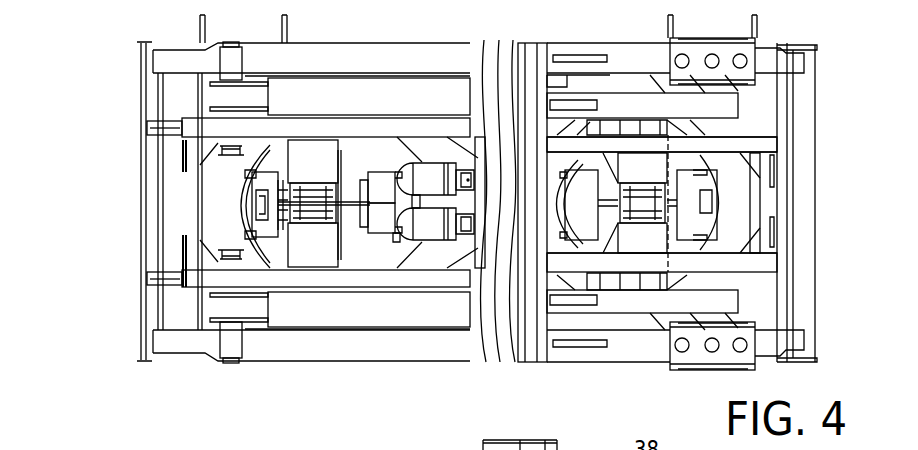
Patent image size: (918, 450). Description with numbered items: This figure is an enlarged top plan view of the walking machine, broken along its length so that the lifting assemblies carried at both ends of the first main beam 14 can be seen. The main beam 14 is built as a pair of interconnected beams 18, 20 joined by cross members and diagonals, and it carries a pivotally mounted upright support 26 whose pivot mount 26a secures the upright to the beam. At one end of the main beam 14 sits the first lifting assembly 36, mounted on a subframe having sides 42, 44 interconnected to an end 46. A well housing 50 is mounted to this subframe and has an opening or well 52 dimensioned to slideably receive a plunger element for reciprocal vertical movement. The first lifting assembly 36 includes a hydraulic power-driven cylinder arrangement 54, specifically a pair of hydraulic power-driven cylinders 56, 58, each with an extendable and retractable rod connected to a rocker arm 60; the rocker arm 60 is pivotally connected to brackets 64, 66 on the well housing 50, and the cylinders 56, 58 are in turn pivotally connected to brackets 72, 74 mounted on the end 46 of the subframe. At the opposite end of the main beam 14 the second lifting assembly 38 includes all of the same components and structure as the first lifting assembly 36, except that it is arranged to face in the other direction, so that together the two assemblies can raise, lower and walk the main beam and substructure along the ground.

The first main beam 14 is at (145, 364).
The beam 18 is at (308, 348).
The beam 20 is at (268, 58).
The upright support 26 is at (396, 314).
The pivot mount 26a is at (231, 365).
The first lifting assembly 36 is at (141, 176).
The second lifting assembly 38 is at (727, 200).
The subframe side 42 is at (188, 279).
The subframe side 44 is at (188, 130).
The subframe end 46 is at (478, 228).
The well housing 50 is at (310, 174).
The well 52 is at (331, 182).
The hydraulic power-driven cylinder arrangement 54 is at (421, 160).
The hydraulic power-driven cylinder 56 is at (430, 229).
The hydraulic power-driven cylinder 58 is at (426, 167).
The rocker arm 60 is at (326, 206).
The bracket 64 is at (365, 226).
The bracket 66 is at (360, 176).
The bracket 72 is at (537, 383).
The bracket 74 is at (499, 100).